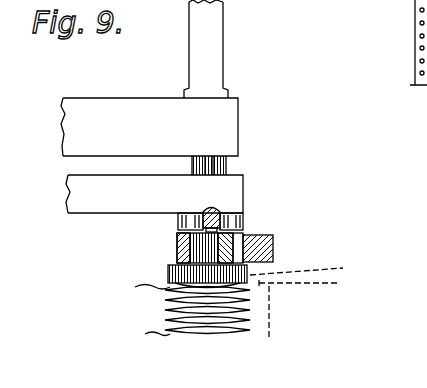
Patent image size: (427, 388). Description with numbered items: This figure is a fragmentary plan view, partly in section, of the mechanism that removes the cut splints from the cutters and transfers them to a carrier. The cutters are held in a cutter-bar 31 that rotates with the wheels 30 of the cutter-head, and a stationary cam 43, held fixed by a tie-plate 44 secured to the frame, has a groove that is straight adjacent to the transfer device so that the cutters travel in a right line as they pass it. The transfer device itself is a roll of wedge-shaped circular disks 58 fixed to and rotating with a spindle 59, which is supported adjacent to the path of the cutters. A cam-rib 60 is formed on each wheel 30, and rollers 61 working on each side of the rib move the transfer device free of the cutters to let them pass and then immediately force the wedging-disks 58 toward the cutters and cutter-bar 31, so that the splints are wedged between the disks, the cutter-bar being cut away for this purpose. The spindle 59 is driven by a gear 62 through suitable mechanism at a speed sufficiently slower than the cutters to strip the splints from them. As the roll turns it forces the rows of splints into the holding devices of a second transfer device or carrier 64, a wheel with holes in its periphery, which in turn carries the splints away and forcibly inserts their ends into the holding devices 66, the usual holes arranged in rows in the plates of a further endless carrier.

The tie-plate 44 is at (217, 72).
The cam 43 is at (238, 125).
The wheel 30 is at (243, 188).
The cam-rib 60 is at (205, 209).
The roller 61 is at (178, 222).
The spindle 59 is at (178, 258).
The gear 62 is at (250, 270).
The carrier 64 is at (335, 283).
The wedge-shaped circular disks 58 is at (250, 310).
The cutter-bar 31 is at (145, 320).
The holding devices 66 is at (420, 62).